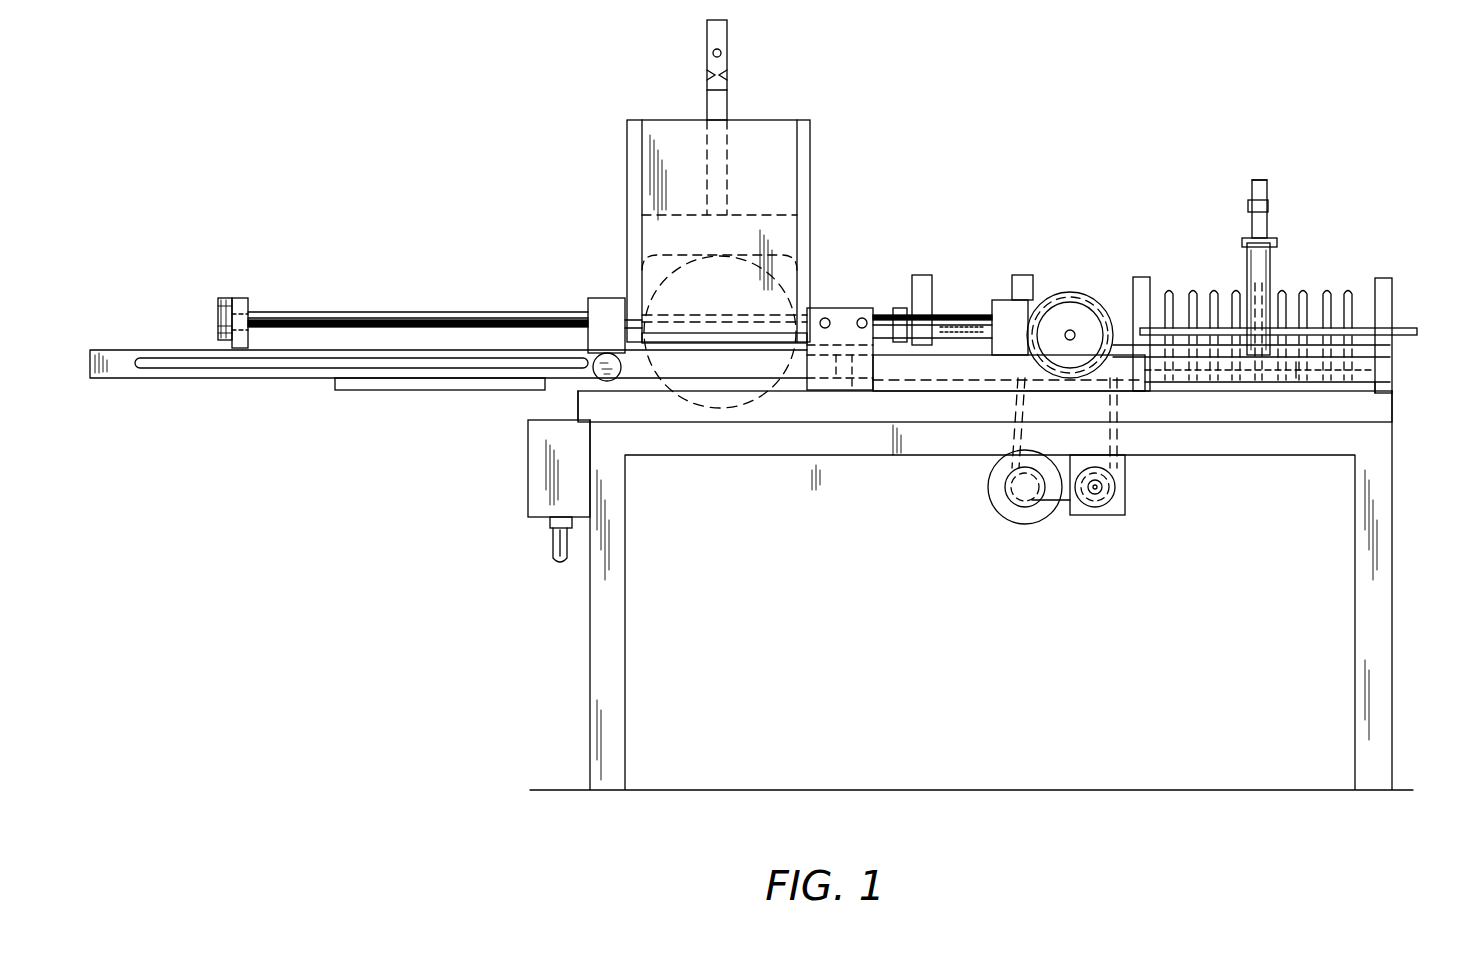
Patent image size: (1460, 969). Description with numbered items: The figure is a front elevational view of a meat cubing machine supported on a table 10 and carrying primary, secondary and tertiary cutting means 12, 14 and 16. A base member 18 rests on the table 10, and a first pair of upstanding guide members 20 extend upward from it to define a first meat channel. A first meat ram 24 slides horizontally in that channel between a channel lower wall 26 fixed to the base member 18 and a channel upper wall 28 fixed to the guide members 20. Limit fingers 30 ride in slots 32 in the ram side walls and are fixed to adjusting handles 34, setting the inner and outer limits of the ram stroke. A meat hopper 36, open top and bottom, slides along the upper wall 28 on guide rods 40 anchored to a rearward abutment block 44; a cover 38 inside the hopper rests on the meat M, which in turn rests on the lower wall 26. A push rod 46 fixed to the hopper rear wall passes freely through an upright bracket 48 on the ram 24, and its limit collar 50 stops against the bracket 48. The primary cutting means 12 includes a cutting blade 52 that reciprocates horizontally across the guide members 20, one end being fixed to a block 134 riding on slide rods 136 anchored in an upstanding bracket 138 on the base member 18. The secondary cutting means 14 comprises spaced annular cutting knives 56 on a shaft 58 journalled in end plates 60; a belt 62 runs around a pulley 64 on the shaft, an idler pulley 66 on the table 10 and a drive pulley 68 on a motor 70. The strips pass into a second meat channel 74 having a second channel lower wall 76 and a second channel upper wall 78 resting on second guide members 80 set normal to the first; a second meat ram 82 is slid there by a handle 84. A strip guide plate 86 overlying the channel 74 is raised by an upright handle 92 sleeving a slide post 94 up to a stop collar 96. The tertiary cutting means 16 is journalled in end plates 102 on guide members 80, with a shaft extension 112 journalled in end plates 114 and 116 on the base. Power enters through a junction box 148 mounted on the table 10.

The table 10 is at (758, 442).
The primary cutting means 12 is at (833, 237).
The secondary cutting means 14 is at (1067, 228).
The tertiary cutting means 16 is at (1362, 204).
The base member 18 is at (700, 422).
The guide members 20 is at (955, 378).
The first meat ram 24 is at (120, 351).
The channel lower wall 26 is at (416, 390).
The channel upper wall 28 is at (690, 343).
The limit fingers 30 is at (616, 380).
The slots 32 is at (196, 357).
The adjusting handles 34 is at (582, 390).
The meat hopper 36 is at (814, 152).
The cover 38 is at (740, 215).
The guide rods 40 is at (945, 317).
The rearward abutment block 44 is at (590, 300).
The push rod 46 is at (320, 312).
The upright bracket 48 is at (242, 298).
The limit collar 50 is at (227, 298).
The cutting blade 52 is at (856, 378).
The cutting knives 56 is at (1329, 292).
The shaft 58 is at (1070, 330).
The end plates 60 is at (1150, 300).
The belt 62 is at (1118, 470).
The pulley 64 is at (1088, 295).
The idler pulley 66 is at (1110, 510).
The drive pulley 68 is at (1036, 506).
The motor 70 is at (1012, 508).
The second meat channel 74 is at (1297, 380).
The second channel lower wall 76 is at (1250, 380).
The second channel upper wall 78 is at (1386, 350).
The guide members 80 is at (1388, 372).
The second meat ram 82 is at (1368, 384).
The handle 84 is at (1269, 290).
The strip guide plate 86 is at (1406, 328).
The upright handle 92 is at (1272, 260).
The slide post 94 is at (1258, 180).
The stop collar 96 is at (1250, 206).
The end plates 102 is at (1142, 277).
The shaft extension 112 is at (900, 308).
The end plate 114 is at (1020, 275).
The end plate 116 is at (920, 275).
The block 134 is at (805, 352).
The slide rods 136 is at (860, 317).
The upstanding bracket 138 is at (834, 380).
The junction box 148 is at (538, 461).
The meat M is at (644, 280).